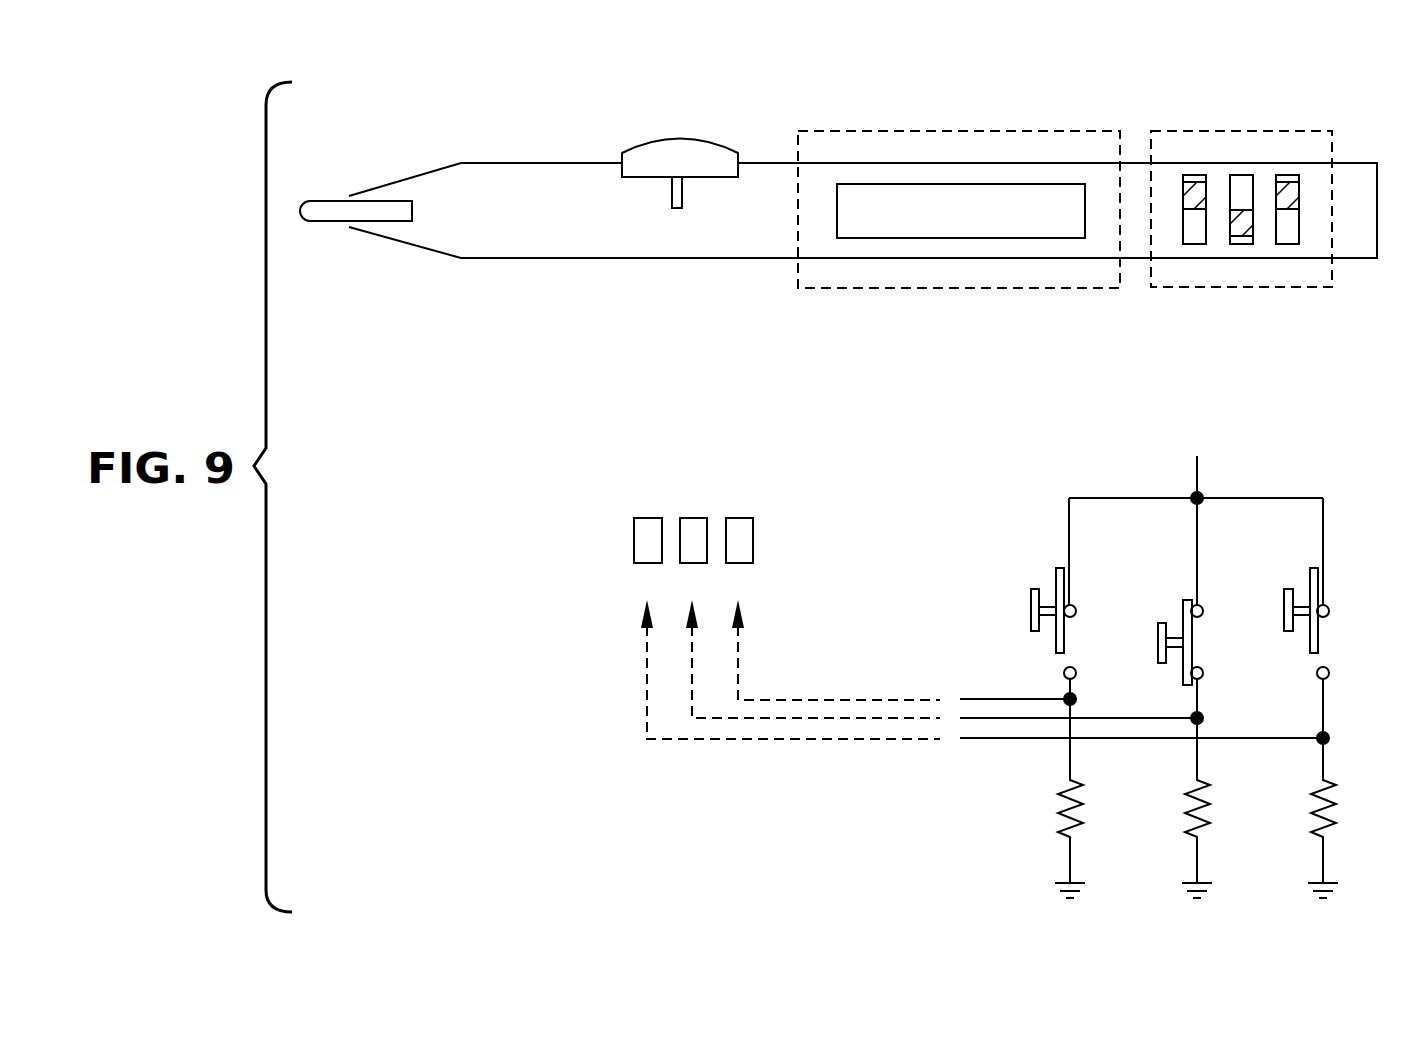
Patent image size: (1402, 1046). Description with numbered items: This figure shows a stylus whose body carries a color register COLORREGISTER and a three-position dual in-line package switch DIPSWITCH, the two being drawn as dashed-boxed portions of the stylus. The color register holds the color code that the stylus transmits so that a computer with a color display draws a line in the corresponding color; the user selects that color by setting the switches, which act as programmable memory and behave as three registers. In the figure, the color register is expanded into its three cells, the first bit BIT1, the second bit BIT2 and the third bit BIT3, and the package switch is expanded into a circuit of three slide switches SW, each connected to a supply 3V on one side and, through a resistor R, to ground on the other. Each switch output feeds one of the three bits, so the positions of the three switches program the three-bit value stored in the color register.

The color register COLORREGISTER is at (824, 413).
The DIP switch DIPSWITCH is at (1212, 387).
The bit 1 BIT1 is at (648, 490).
The bit 2 BIT2 is at (693, 490).
The bit 3 BIT3 is at (739, 490).
The 3V supply 3V is at (1197, 456).
The switch SW is at (1206, 591).
The resistor R is at (1209, 788).